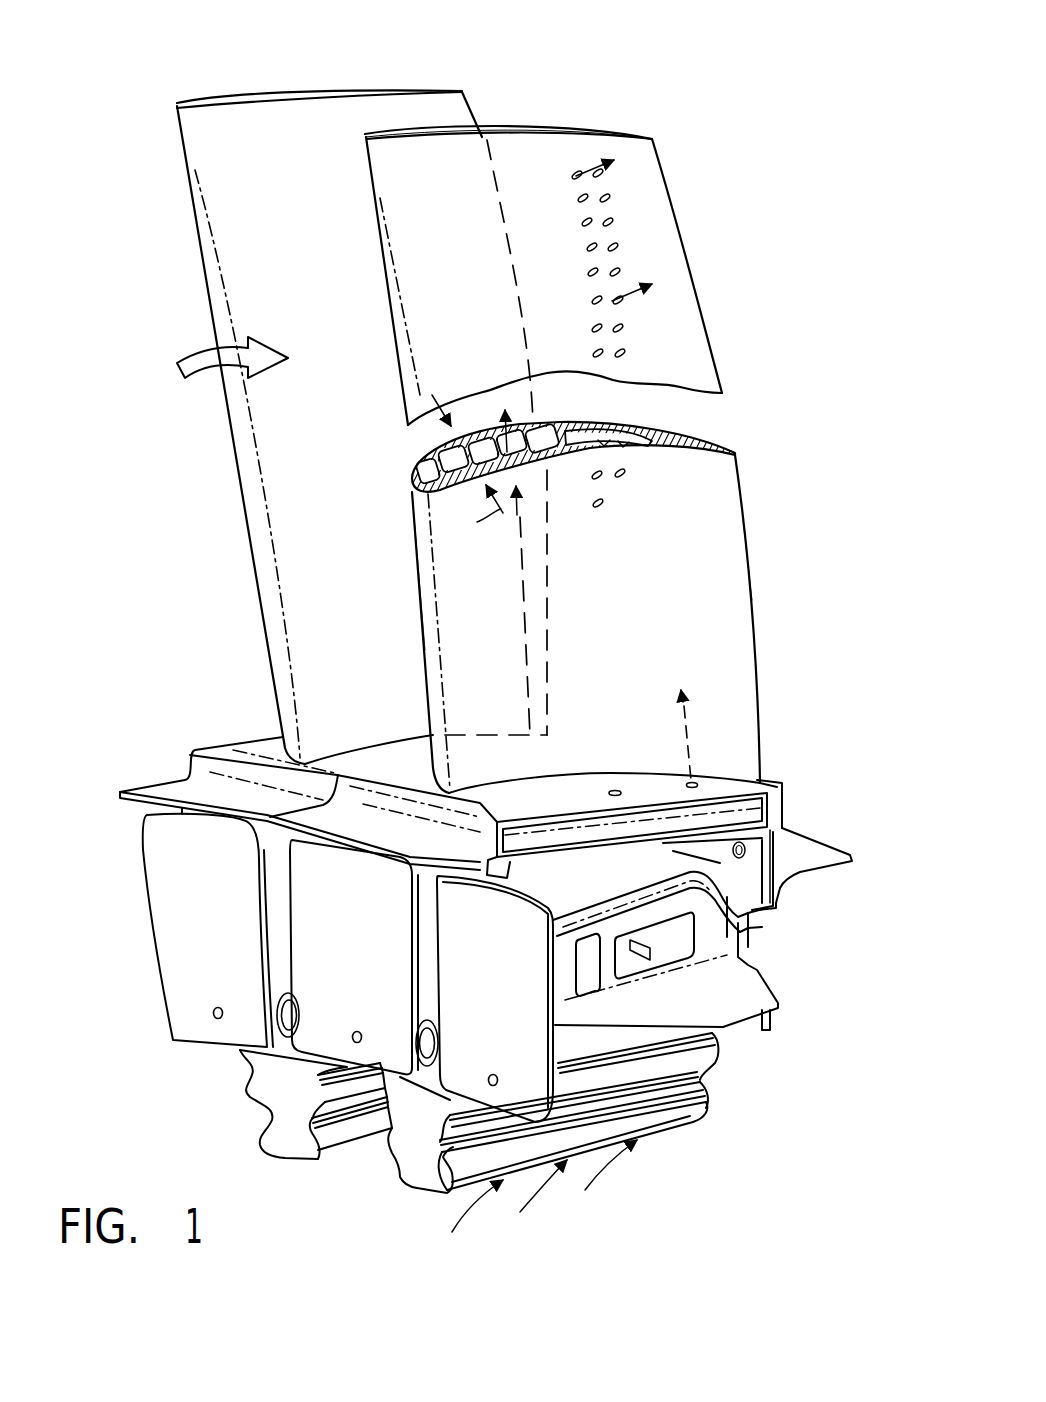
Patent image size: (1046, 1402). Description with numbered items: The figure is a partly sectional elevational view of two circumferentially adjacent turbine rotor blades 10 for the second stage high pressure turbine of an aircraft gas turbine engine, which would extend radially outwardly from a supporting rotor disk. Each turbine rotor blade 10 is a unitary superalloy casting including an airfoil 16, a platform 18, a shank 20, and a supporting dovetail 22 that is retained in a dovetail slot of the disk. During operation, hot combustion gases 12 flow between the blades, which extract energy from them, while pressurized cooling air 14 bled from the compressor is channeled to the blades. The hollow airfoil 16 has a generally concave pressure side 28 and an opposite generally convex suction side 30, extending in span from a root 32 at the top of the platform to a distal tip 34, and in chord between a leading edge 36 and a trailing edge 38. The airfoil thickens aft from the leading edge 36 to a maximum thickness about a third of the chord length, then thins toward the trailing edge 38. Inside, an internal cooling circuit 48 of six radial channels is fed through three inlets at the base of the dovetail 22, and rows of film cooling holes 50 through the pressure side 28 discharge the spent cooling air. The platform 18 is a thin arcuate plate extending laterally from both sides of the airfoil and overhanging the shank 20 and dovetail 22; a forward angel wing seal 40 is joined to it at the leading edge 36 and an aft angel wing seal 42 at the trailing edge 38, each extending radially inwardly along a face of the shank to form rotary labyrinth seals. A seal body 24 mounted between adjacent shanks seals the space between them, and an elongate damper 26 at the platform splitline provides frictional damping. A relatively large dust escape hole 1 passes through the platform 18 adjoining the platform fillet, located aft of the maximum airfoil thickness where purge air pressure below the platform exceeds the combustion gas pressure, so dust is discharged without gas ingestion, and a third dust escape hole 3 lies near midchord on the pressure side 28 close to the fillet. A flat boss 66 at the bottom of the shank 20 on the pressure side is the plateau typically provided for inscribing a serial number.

The escape hole 1 is at (693, 782).
The third dust escape hole 3 is at (613, 790).
The turbine rotor blade 10 is at (716, 160).
The hot combustion gases 12 is at (195, 360).
The pressurized cooling air 14 is at (204, 1018).
The airfoil 16 is at (708, 270).
The platform 18 is at (778, 787).
The shank 20 is at (588, 884).
The dovetail 22 is at (717, 1046).
The seal body 24 is at (158, 895).
The damper 26 is at (650, 820).
The pressure side 28 is at (636, 602).
The suction side 30 is at (425, 460).
The root 32 is at (518, 775).
The tip 34 is at (539, 136).
The leading edge 36 is at (432, 552).
The trailing edge 38 is at (750, 547).
The forward angel wing seal 40 is at (152, 787).
The aft angel wing seal 42 is at (817, 852).
The internal cooling circuit 48 is at (476, 440).
The film cooling holes 50 is at (585, 220).
The boss 66 is at (637, 950).